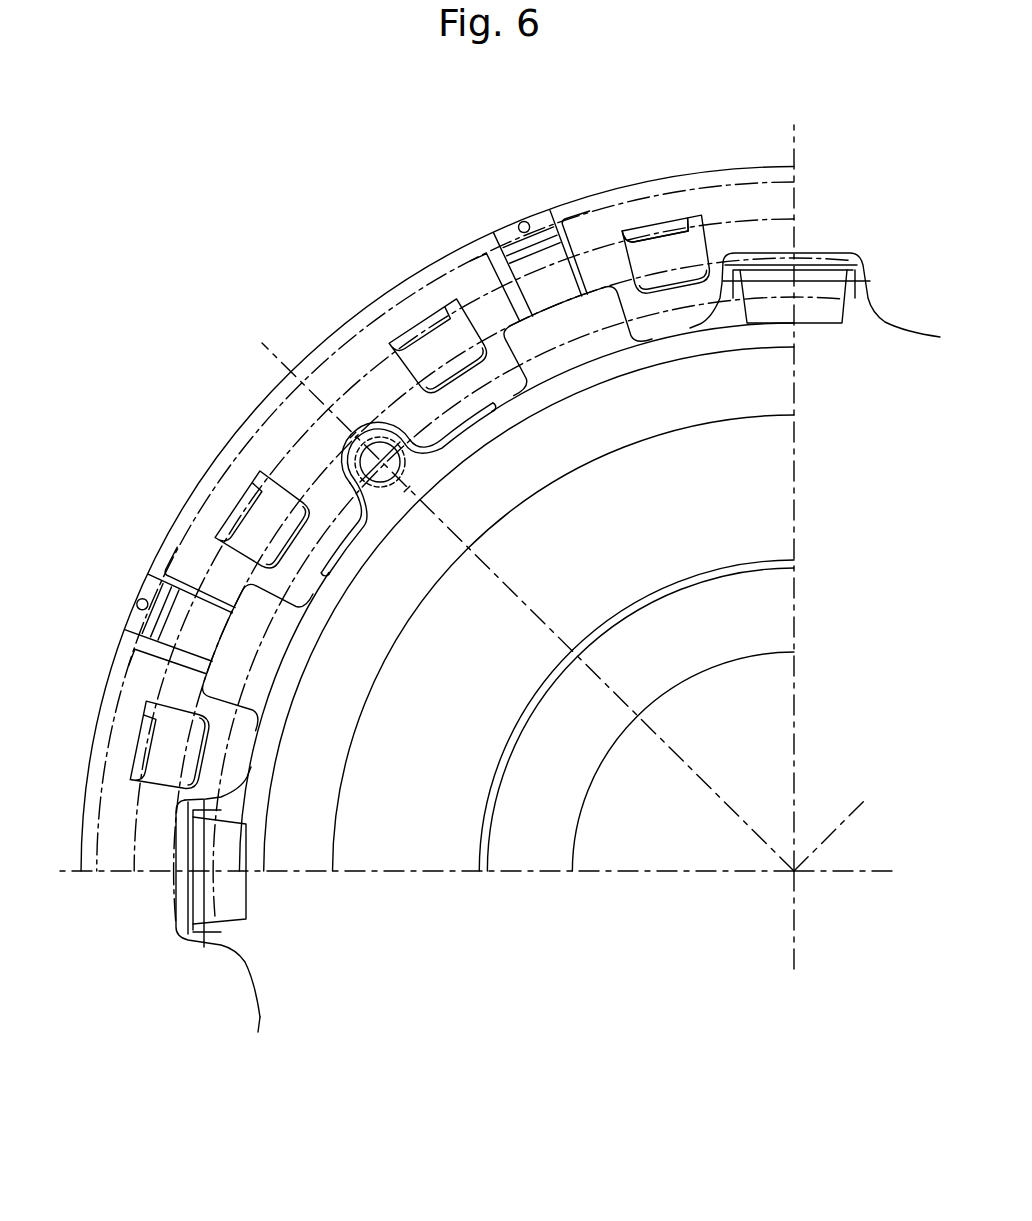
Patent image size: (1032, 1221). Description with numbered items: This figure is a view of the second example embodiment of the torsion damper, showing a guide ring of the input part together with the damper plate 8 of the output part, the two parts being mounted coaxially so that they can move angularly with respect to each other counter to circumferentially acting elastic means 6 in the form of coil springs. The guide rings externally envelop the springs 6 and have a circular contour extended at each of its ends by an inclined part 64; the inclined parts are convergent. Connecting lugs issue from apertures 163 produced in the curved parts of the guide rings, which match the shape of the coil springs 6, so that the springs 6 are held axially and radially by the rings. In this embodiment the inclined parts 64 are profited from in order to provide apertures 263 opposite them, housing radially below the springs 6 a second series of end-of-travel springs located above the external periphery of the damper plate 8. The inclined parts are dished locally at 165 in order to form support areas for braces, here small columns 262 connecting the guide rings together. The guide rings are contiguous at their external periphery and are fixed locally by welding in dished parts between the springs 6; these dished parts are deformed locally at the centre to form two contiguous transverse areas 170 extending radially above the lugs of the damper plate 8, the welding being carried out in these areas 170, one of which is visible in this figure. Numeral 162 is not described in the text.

The circumferentially acting elastic means 6 is at (408, 283).
The damper plate 8 is at (391, 849).
The inclined part 64 is at (317, 563).
The tab 162 is at (677, 232).
The aperture 163 is at (698, 243).
The dished part of inclined part 165 is at (351, 436).
The contiguous transverse area 170 is at (537, 220).
The small column 262 is at (383, 462).
The aperture 263 is at (778, 325).